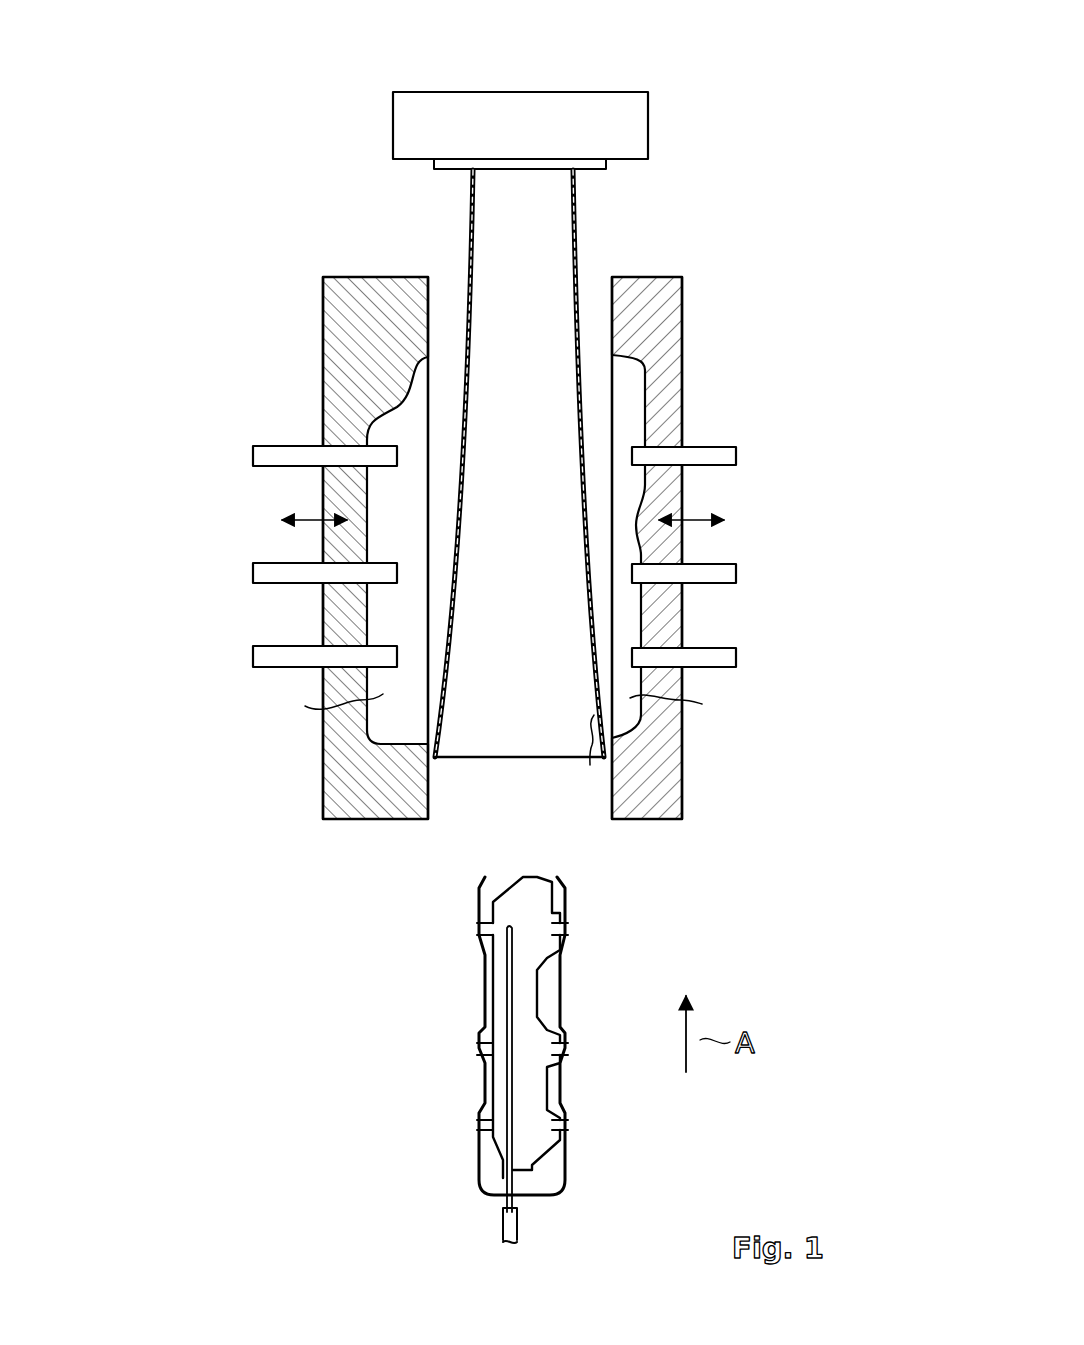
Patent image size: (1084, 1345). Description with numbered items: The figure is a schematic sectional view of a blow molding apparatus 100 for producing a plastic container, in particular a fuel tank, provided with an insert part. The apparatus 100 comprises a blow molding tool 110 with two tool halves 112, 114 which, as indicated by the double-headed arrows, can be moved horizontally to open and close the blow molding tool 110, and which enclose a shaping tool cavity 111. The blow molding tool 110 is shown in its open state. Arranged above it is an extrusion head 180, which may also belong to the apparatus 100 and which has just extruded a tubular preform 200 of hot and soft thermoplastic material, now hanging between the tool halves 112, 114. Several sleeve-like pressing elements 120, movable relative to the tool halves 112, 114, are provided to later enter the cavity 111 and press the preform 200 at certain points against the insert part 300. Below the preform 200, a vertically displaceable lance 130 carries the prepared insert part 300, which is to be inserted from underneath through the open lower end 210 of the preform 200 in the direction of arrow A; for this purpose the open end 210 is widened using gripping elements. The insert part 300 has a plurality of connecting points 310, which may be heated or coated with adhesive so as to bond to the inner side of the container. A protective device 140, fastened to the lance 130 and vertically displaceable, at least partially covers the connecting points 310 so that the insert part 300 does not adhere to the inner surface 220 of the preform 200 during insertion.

The apparatus 100 is at (762, 98).
The blow molding tool 110 is at (494, 536).
The shaping tool cavity 111 is at (506, 698).
The tool half 112 is at (333, 351).
The tool half 114 is at (678, 347).
The pressing elements 120 is at (253, 455).
The lance 130 is at (519, 1222).
The protective device 140 is at (568, 1087).
The extrusion head 180 is at (522, 103).
The tubular preform 200 is at (551, 507).
The open lower end 210 is at (486, 760).
The inner surface 220 is at (593, 766).
The insert part 300 is at (520, 1036).
The connecting points 310 is at (478, 929).